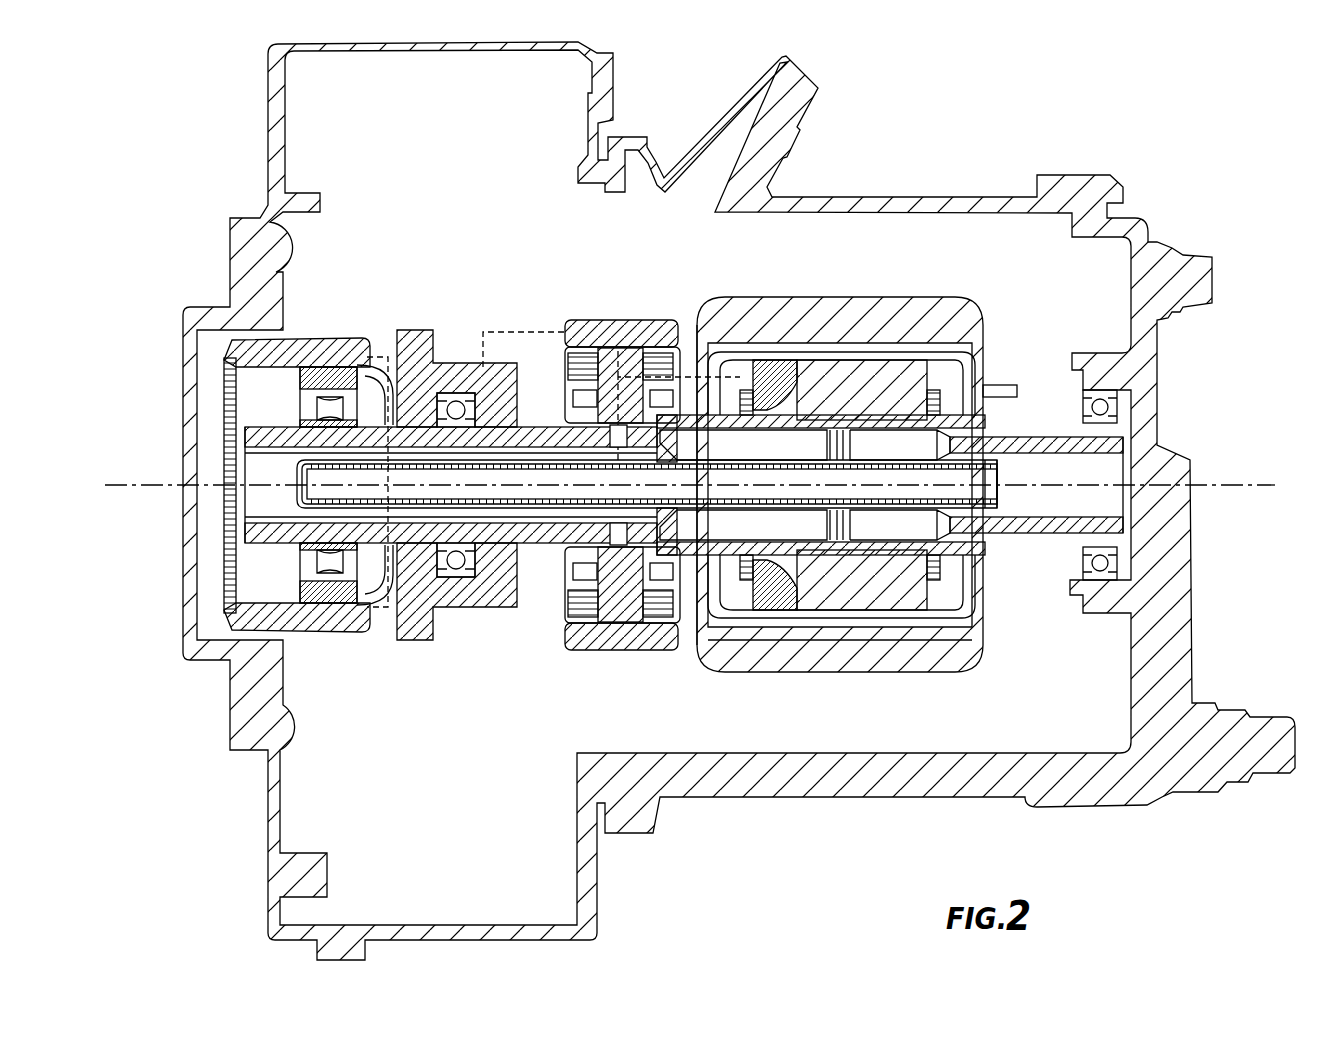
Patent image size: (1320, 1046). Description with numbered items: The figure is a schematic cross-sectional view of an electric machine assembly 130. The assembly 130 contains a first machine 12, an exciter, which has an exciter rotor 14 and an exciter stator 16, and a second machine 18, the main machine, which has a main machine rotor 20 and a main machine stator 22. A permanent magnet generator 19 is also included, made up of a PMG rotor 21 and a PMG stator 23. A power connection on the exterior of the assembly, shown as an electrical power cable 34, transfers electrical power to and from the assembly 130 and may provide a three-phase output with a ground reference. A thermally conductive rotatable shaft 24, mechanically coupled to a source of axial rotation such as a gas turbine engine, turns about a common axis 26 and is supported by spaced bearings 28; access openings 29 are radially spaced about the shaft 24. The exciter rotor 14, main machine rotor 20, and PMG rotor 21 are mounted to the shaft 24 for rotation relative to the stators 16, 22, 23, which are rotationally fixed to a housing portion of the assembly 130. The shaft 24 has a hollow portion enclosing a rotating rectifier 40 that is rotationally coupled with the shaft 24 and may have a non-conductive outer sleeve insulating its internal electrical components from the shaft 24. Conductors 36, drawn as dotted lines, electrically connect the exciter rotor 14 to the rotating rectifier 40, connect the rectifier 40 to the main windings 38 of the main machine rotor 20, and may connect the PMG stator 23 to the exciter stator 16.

The first machine 12 is at (688, 362).
The exciter rotor 14 is at (608, 362).
The exciter stator 16 is at (630, 332).
The second machine 18 is at (988, 572).
The permanent magnet generator 19 is at (380, 392).
The main machine rotor 20 is at (893, 380).
The PMG rotor 21 is at (335, 400).
The main machine stator 22 is at (900, 662).
The PMG stator 23 is at (335, 605).
The rotatable shaft 24 is at (283, 522).
The common axis 26 is at (1218, 482).
The bearings 28 is at (457, 565).
The access openings 29 is at (607, 433).
The electrical power cable 34 is at (1003, 385).
The conductors 36 is at (587, 380).
The main windings 38 is at (790, 395).
The rotating rectifier 40 is at (323, 460).
The electric machine assembly 130 is at (912, 95).